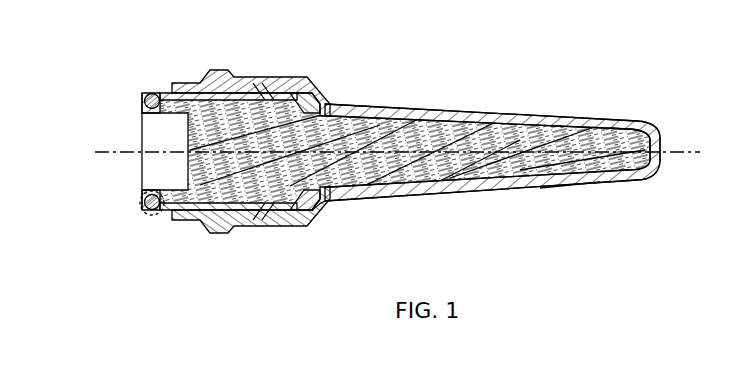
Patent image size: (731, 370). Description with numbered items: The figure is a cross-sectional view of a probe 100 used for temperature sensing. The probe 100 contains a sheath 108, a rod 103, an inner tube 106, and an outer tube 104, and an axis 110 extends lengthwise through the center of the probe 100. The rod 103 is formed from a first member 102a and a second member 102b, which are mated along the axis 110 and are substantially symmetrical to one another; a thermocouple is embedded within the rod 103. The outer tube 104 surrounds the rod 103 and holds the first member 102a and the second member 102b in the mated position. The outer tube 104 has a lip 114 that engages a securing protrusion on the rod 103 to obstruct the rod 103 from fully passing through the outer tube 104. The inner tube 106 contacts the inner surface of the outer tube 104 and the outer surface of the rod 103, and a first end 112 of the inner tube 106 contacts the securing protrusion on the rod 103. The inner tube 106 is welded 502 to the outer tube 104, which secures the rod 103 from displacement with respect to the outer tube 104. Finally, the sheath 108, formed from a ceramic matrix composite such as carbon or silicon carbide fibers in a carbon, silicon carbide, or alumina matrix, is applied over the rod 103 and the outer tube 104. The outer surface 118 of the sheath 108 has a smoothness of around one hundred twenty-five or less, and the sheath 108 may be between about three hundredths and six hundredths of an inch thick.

The probe 100 is at (153, 33).
The first member 102a is at (577, 133).
The second member 102b is at (585, 168).
The rod 103 is at (622, 135).
The outer tube 104 is at (308, 217).
The inner tube 106 is at (242, 222).
The sheath 108 is at (552, 189).
The axis 110 is at (688, 150).
The first end of the inner tube 112 is at (283, 207).
The lip 114 is at (316, 92).
The outer surface of the sheath 118 is at (523, 190).
The weld 502 is at (138, 207).